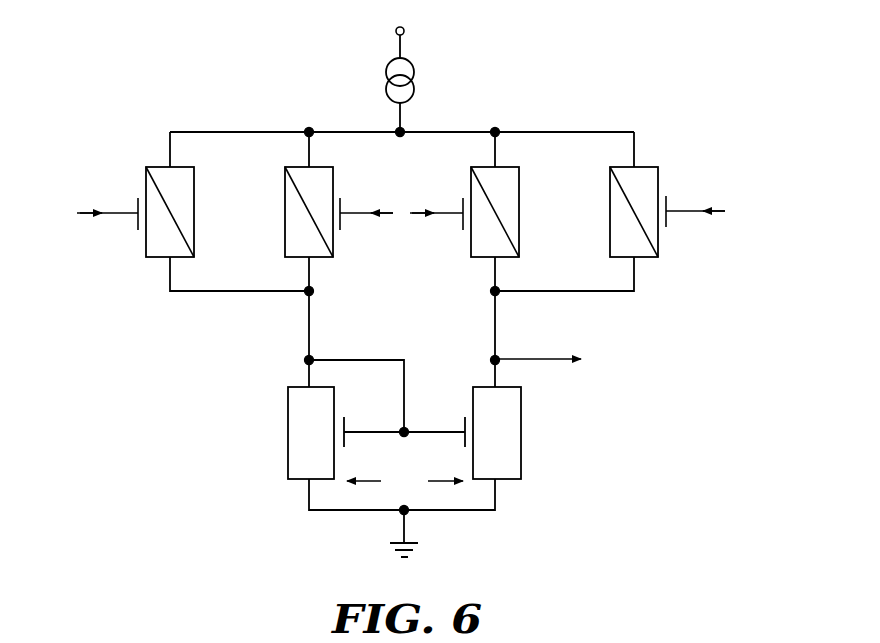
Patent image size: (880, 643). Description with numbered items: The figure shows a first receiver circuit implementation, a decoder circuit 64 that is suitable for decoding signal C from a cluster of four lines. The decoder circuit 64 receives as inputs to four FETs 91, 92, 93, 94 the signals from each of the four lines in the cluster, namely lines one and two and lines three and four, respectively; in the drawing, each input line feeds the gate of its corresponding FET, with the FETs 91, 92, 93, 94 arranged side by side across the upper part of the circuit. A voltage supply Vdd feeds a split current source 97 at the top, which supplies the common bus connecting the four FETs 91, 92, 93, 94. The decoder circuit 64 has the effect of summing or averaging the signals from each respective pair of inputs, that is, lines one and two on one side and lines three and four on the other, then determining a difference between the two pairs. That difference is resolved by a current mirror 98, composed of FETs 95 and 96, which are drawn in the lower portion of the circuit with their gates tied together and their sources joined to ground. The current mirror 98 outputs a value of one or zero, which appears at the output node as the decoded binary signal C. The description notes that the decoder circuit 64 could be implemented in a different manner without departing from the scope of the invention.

The decoder circuit 64 is at (128, 121).
The FET 91 is at (184, 183).
The FET 92 is at (323, 181).
The FET 93 is at (510, 180).
The FET 94 is at (648, 180).
The FET 95 is at (325, 401).
The FET 96 is at (510, 401).
The split current source 97 is at (412, 81).
The current mirror 98 is at (405, 482).